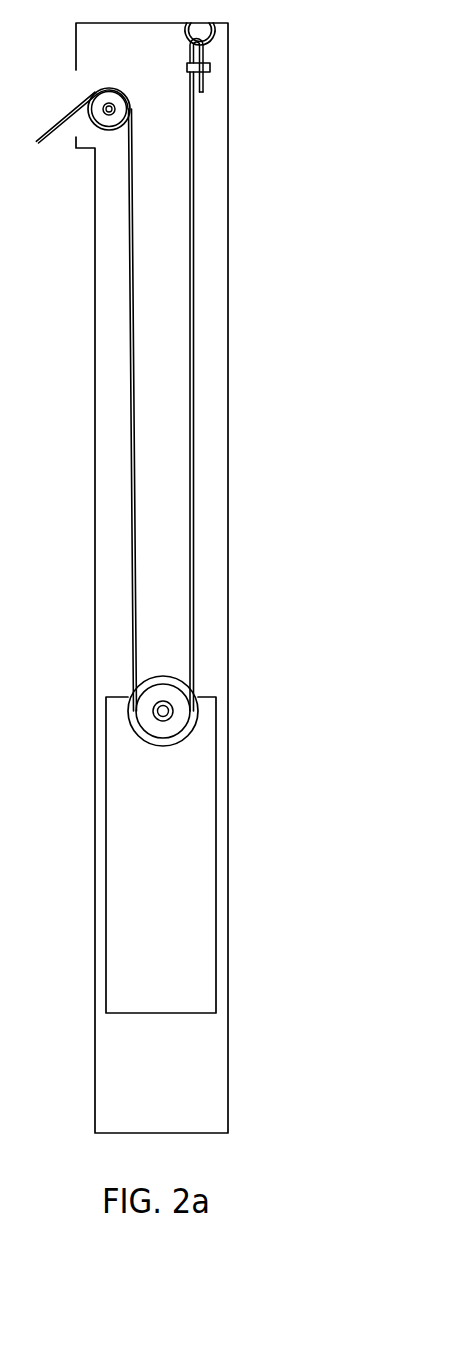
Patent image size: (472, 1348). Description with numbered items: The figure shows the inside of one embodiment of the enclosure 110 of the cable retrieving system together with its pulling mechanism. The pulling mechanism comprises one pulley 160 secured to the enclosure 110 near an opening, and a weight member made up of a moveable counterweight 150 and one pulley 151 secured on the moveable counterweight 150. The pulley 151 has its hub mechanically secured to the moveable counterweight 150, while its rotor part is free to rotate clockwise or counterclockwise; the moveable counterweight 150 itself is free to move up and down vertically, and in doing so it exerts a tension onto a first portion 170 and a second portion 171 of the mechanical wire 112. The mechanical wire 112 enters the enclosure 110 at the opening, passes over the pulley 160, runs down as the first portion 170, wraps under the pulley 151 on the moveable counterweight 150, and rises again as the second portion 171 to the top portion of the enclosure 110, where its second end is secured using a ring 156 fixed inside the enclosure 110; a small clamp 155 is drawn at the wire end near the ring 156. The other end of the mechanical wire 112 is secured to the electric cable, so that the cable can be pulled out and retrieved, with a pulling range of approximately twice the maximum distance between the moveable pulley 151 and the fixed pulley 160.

The enclosure 110 is at (217, 362).
The mechanical wire 112 is at (46, 136).
The moveable counterweight 150 is at (208, 909).
The pulley 151 is at (164, 730).
The rope clamp 155 is at (187, 68).
The ring 156 is at (185, 34).
The pulley 160 is at (101, 101).
The first portion 170 is at (134, 277).
The second portion 171 is at (188, 442).